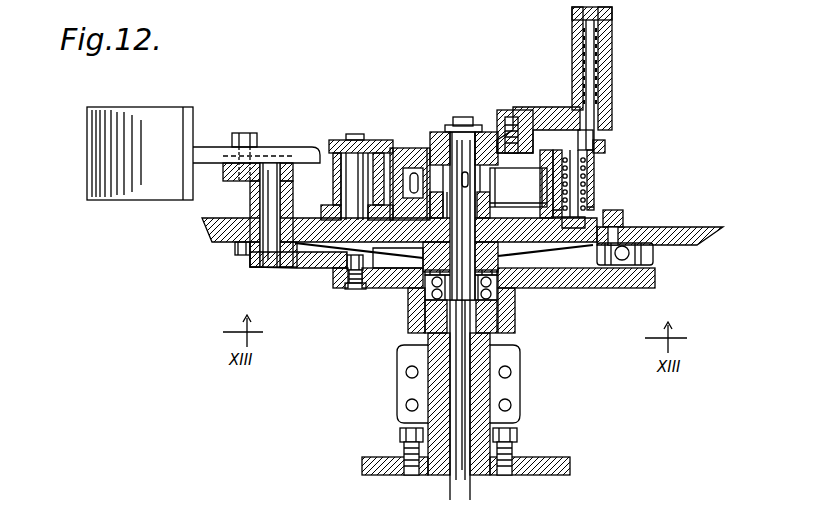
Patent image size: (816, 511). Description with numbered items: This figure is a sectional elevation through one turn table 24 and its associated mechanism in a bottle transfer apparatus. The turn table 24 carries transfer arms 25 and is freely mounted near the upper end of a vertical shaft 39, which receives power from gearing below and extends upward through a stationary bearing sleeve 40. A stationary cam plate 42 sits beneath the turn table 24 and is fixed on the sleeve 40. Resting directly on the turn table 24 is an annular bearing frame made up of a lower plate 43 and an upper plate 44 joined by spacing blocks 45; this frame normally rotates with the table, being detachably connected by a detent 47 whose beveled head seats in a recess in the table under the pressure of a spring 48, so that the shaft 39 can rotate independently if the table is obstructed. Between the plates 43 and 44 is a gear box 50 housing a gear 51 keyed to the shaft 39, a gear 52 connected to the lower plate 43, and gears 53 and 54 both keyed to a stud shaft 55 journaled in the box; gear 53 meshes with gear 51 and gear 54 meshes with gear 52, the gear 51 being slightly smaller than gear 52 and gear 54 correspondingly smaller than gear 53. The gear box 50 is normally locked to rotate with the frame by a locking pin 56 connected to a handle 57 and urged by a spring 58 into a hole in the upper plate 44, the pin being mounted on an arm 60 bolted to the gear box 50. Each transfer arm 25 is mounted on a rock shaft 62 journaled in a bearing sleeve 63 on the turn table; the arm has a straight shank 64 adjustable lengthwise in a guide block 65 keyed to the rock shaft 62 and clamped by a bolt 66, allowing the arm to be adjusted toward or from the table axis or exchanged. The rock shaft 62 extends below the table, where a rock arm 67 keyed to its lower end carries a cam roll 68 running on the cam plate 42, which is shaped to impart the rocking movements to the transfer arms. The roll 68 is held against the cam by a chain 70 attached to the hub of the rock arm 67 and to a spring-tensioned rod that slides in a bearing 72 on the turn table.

The turn table 24 is at (680, 233).
The transfer arm 25 is at (165, 117).
The shaft 39 is at (470, 488).
The bearing sleeve 40 is at (480, 375).
The cam plate 42 is at (597, 283).
The lower plate 43 is at (535, 246).
The upper plate 44 is at (375, 140).
The spacing block 45 is at (350, 189).
The detent 47 is at (573, 196).
The spring 48 is at (587, 172).
The gear box 50 is at (505, 168).
The gear 51 is at (497, 172).
The gear 52 is at (500, 192).
The gear 53 is at (432, 165).
The gear 54 is at (385, 207).
The stud shaft 55 is at (410, 162).
The locking pin 56 is at (593, 142).
The handle 57 is at (610, 65).
The spring 58 is at (602, 88).
The arm 60 is at (545, 113).
The rock shaft 62 is at (268, 211).
The bearing sleeve 63 is at (255, 193).
The shank 64 is at (207, 150).
The guide block 65 is at (293, 161).
The bolt 66 is at (248, 138).
The rock arm 67 is at (318, 267).
The cam roll 68 is at (340, 286).
The chain 70 is at (242, 259).
The bearing 72 is at (653, 256).